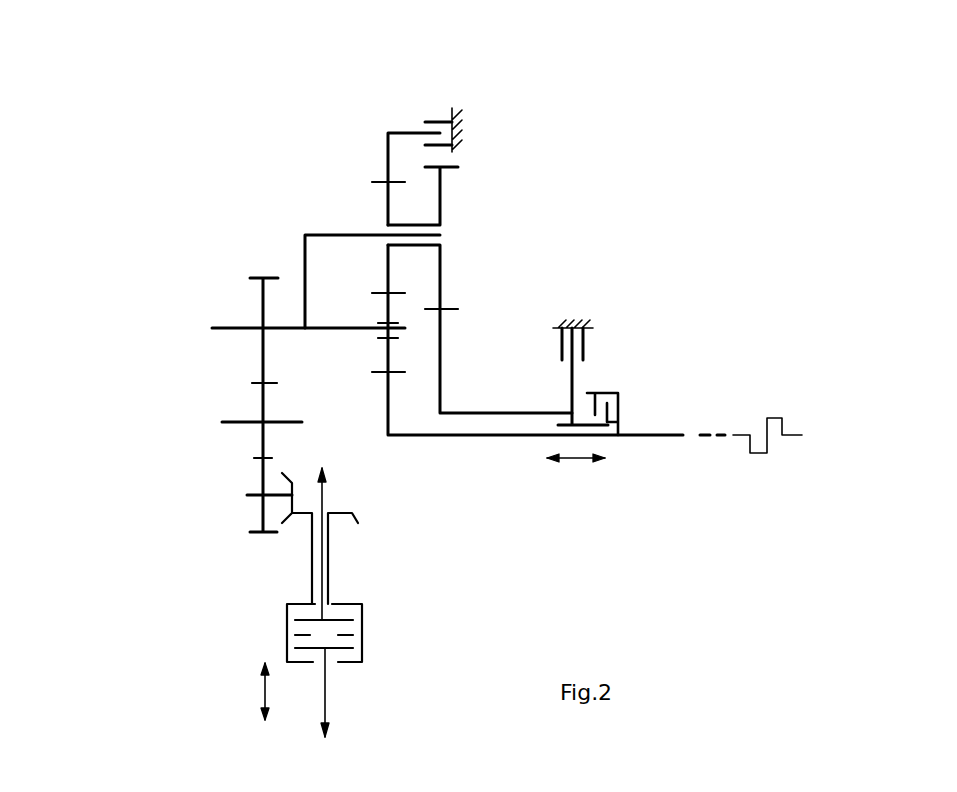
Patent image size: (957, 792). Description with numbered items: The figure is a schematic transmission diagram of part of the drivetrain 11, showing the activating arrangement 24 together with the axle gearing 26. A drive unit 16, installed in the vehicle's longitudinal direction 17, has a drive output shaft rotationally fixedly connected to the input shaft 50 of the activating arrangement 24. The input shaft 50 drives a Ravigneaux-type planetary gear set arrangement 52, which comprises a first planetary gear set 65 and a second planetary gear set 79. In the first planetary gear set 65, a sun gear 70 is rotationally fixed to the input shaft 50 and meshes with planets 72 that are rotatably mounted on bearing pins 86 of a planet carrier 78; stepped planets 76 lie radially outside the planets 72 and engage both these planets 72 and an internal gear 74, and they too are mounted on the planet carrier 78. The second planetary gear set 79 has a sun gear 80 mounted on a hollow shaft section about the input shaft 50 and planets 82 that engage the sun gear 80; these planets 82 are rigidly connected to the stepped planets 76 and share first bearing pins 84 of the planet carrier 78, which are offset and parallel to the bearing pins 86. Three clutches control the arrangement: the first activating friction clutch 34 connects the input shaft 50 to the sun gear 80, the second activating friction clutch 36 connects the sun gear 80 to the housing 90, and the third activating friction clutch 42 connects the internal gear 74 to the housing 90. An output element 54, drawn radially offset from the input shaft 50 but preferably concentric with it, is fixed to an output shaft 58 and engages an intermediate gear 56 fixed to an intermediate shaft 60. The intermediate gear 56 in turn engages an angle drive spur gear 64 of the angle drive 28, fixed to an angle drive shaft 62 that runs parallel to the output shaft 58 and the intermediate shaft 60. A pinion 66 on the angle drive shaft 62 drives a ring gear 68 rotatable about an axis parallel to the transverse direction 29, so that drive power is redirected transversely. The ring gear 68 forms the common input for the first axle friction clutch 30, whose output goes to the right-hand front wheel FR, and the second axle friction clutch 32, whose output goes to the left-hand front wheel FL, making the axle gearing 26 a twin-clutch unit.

The drivetrain 11 is at (635, 188).
The drive unit 16 is at (757, 457).
The longitudinal direction 17 is at (572, 460).
The activating arrangement 24 is at (553, 160).
The axle gearing 26 is at (400, 618).
The angle drive 28 is at (273, 548).
The transverse direction 29 is at (258, 692).
The first axle friction clutch 30 is at (362, 647).
The second axle friction clutch 32 is at (362, 612).
The first activating friction clutch 34 is at (612, 385).
The second activating friction clutch 36 is at (590, 350).
The third activating friction clutch 42 is at (433, 118).
The input shaft 50 is at (650, 442).
The planetary gear set arrangement 52 is at (375, 118).
The output element 54 is at (260, 292).
The intermediate gear 56 is at (262, 442).
The output shaft 58 is at (212, 327).
The intermediate shaft 60 is at (237, 420).
The angle drive shaft 62 is at (257, 495).
The angle drive spur gear 64 is at (262, 515).
The first planetary gear set 65 is at (397, 115).
The pinion 66 is at (293, 527).
The ring gear 68 is at (358, 520).
The sun gear 70 is at (383, 405).
The planets 72 is at (380, 360).
The internal gear 74 is at (385, 160).
The stepped planets 76 is at (387, 203).
The planet carrier 78 is at (300, 247).
The second planetary gear set 79 is at (425, 85).
The sun gear 80 is at (443, 360).
The planets 82 is at (443, 280).
The first bearing pins 84 is at (305, 245).
The bearing pins 86 is at (337, 327).
The housing 90 is at (463, 125).